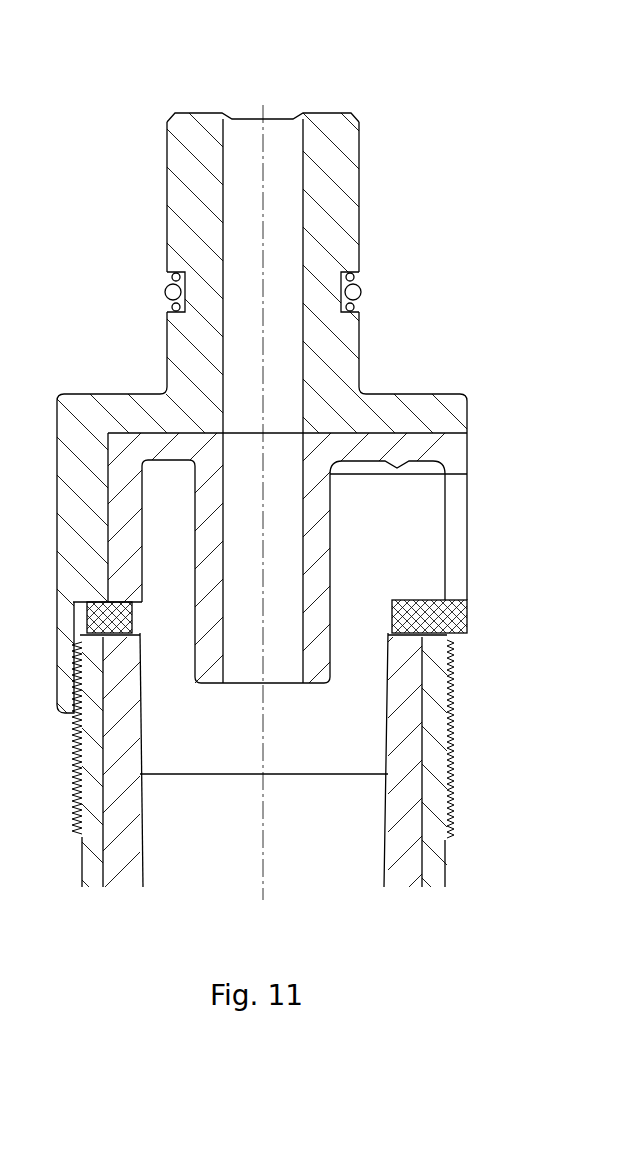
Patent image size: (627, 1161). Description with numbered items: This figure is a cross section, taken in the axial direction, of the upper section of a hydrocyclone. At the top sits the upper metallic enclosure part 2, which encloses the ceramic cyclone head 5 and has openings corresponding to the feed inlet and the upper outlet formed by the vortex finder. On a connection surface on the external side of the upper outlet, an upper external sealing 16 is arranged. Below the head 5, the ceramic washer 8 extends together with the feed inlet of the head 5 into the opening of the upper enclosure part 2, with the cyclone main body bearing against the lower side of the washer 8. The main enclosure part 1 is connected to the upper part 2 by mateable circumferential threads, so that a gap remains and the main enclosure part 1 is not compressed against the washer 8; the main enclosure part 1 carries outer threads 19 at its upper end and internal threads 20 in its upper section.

The main enclosure part 1 is at (440, 810).
The upper metallic enclosure part 2 is at (423, 418).
The cyclone head 5 is at (467, 448).
The ceramic washer 8 is at (465, 620).
The upper external sealing 16 is at (358, 287).
The outer threads 19 is at (448, 740).
The internal threads 20 is at (77, 685).